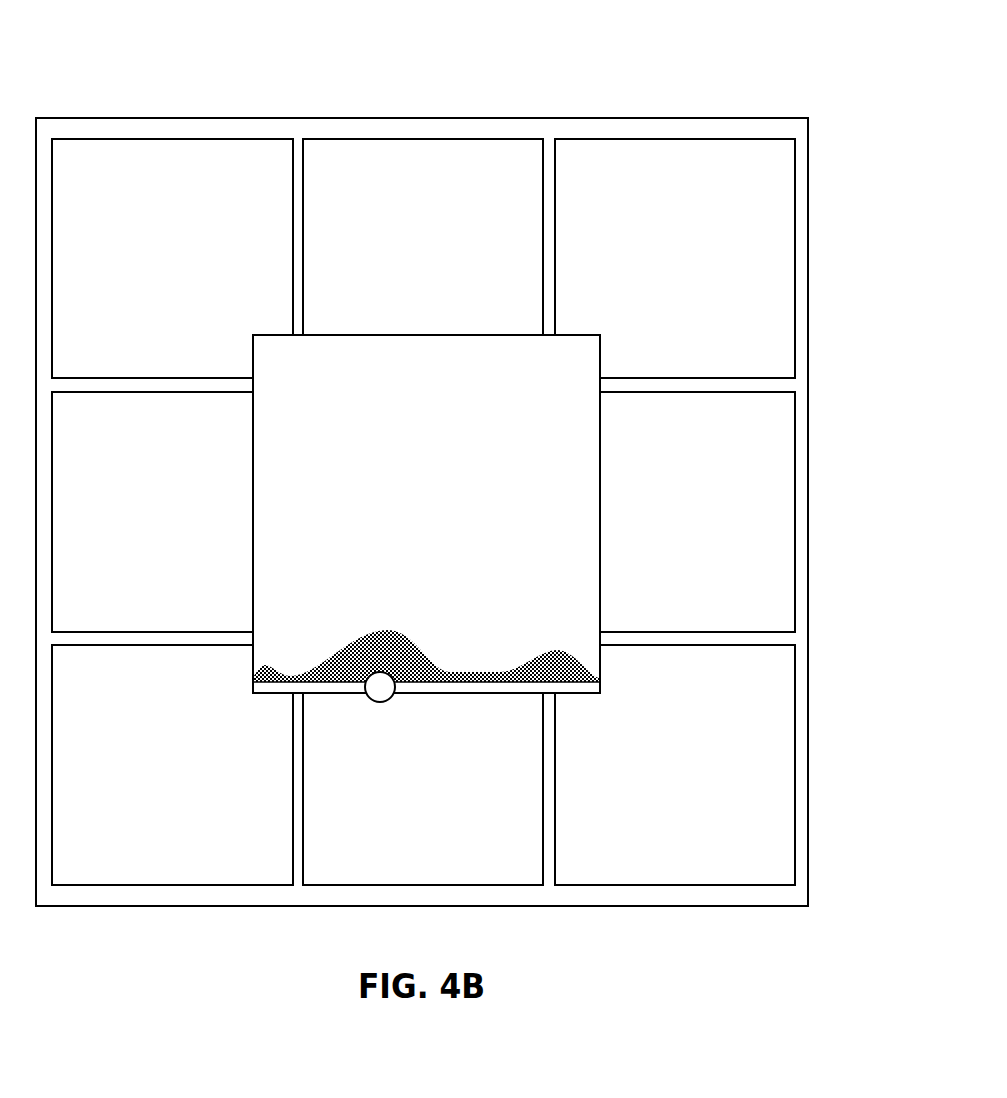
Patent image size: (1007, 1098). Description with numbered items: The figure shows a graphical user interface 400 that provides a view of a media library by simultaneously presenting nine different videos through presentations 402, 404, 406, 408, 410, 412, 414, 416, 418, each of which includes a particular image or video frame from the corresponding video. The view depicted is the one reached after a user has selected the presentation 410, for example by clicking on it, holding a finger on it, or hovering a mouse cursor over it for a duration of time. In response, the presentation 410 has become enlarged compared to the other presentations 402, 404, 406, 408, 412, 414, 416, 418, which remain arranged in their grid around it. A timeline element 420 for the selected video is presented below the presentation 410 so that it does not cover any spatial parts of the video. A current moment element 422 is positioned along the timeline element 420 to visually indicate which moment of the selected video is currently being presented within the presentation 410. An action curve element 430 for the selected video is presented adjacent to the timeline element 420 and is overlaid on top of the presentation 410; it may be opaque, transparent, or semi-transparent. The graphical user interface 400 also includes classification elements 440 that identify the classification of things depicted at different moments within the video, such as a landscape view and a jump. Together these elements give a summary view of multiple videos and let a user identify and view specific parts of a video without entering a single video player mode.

The graphical user interface 400 is at (483, 118).
The presentation 402 is at (193, 272).
The presentation 404 is at (445, 272).
The presentation 406 is at (697, 272).
The presentation 408 is at (193, 524).
The presentation 410 is at (313, 382).
The presentation 412 is at (697, 524).
The presentation 414 is at (193, 778).
The presentation 416 is at (445, 780).
The presentation 418 is at (697, 778).
The timeline element 420 is at (503, 695).
The current moment element 422 is at (380, 702).
The action curve element 430 is at (277, 670).
The classification elements 440 is at (423, 590).